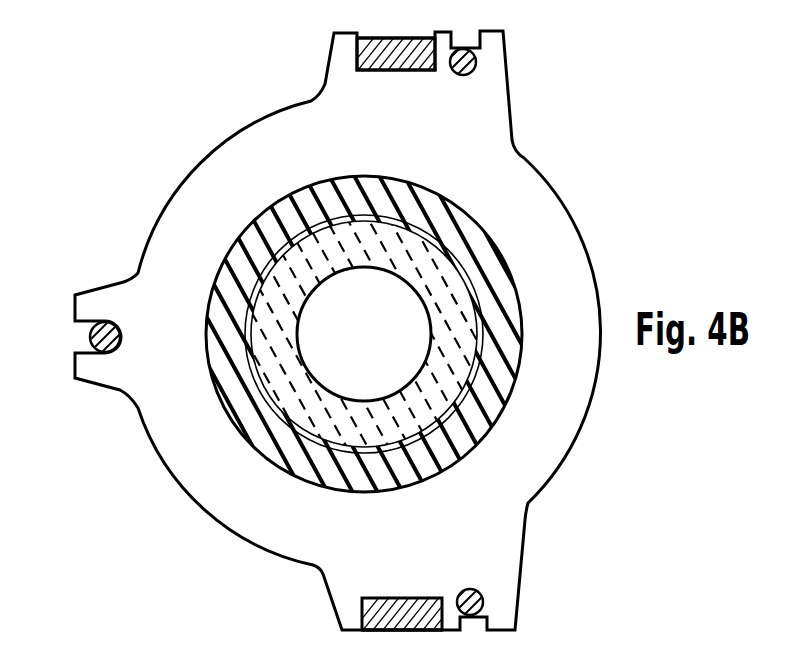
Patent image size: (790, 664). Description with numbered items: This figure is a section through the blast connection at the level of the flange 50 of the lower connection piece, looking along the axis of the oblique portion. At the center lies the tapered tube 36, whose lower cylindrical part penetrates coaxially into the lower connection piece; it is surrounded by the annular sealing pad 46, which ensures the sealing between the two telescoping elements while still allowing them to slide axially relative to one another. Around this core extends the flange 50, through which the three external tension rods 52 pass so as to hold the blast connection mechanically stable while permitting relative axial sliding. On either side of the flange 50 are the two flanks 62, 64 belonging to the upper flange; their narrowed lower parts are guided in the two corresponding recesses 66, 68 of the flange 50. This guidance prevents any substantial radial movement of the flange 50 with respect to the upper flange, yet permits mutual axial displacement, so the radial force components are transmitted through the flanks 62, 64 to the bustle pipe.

The tapered tube 36 is at (247, 231).
The annular sealing pad 46 is at (233, 288).
The flange of the lower connection piece 50 is at (222, 157).
The external tension rods 52 is at (477, 57).
The flank of the upper flange 62 is at (367, 52).
The flank of the upper flange 64 is at (363, 607).
The recess of the lower flange 66 is at (366, 37).
The recess of the lower flange 68 is at (373, 633).